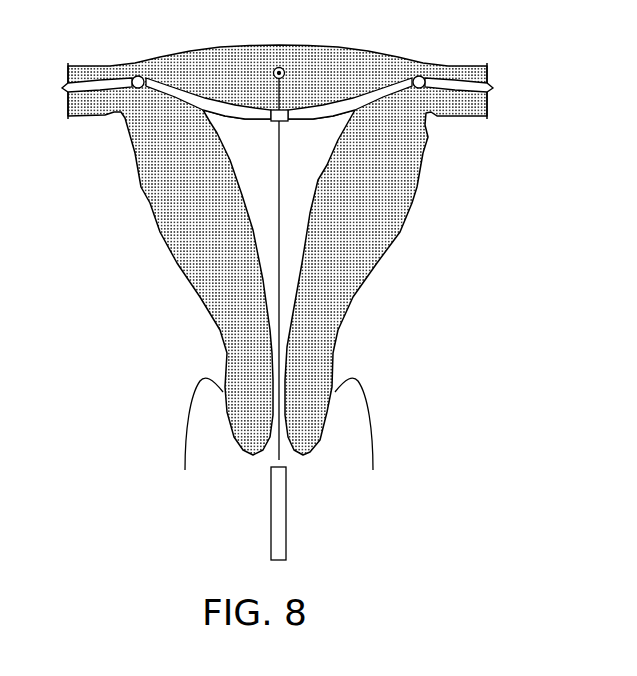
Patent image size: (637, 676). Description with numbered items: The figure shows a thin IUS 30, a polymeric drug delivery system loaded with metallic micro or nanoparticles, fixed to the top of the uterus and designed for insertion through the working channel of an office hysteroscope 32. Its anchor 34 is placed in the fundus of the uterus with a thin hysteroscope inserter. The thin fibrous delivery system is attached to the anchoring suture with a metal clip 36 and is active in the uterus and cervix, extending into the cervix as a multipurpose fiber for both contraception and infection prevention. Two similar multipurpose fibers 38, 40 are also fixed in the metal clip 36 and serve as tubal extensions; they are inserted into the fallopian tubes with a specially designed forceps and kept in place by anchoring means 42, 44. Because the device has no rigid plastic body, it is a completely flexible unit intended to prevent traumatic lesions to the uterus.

The IUS 30 is at (277, 212).
The office hysteroscope 32 is at (262, 535).
The anchor 34 is at (279, 67).
The metal clip 36 is at (288, 117).
The multipurpose fiber 38 is at (238, 120).
The multipurpose fiber 40 is at (352, 112).
The anchoring means 42 is at (132, 83).
The anchoring means 44 is at (426, 84).